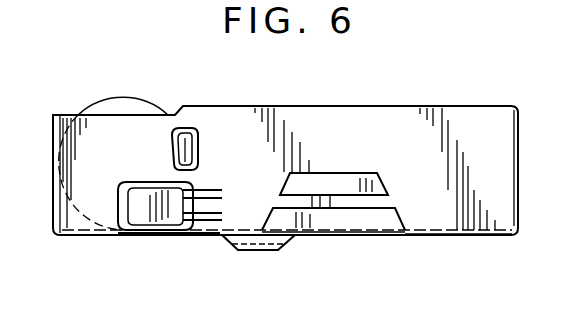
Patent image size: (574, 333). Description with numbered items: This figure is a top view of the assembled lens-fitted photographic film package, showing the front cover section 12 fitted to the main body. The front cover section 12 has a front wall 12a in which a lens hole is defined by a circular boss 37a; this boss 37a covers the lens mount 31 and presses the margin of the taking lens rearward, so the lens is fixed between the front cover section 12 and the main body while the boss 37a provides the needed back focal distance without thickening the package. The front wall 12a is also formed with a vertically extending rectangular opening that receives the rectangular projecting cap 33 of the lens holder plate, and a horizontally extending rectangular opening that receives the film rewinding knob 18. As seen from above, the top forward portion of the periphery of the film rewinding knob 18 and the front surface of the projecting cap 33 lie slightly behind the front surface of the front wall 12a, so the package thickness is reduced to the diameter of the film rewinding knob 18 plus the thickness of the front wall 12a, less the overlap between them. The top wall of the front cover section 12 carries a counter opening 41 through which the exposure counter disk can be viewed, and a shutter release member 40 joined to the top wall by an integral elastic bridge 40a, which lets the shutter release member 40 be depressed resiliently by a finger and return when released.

The front cover section 12 is at (467, 100).
The front wall 12a is at (445, 237).
The film rewinding knob 18 is at (125, 105).
The lens mount 31 is at (275, 252).
The rectangular projecting cap 33 is at (196, 240).
The circular boss 37a is at (297, 242).
The shutter release member 40 is at (153, 236).
The elastic bridge 40a is at (207, 205).
The counter opening 41 is at (193, 128).